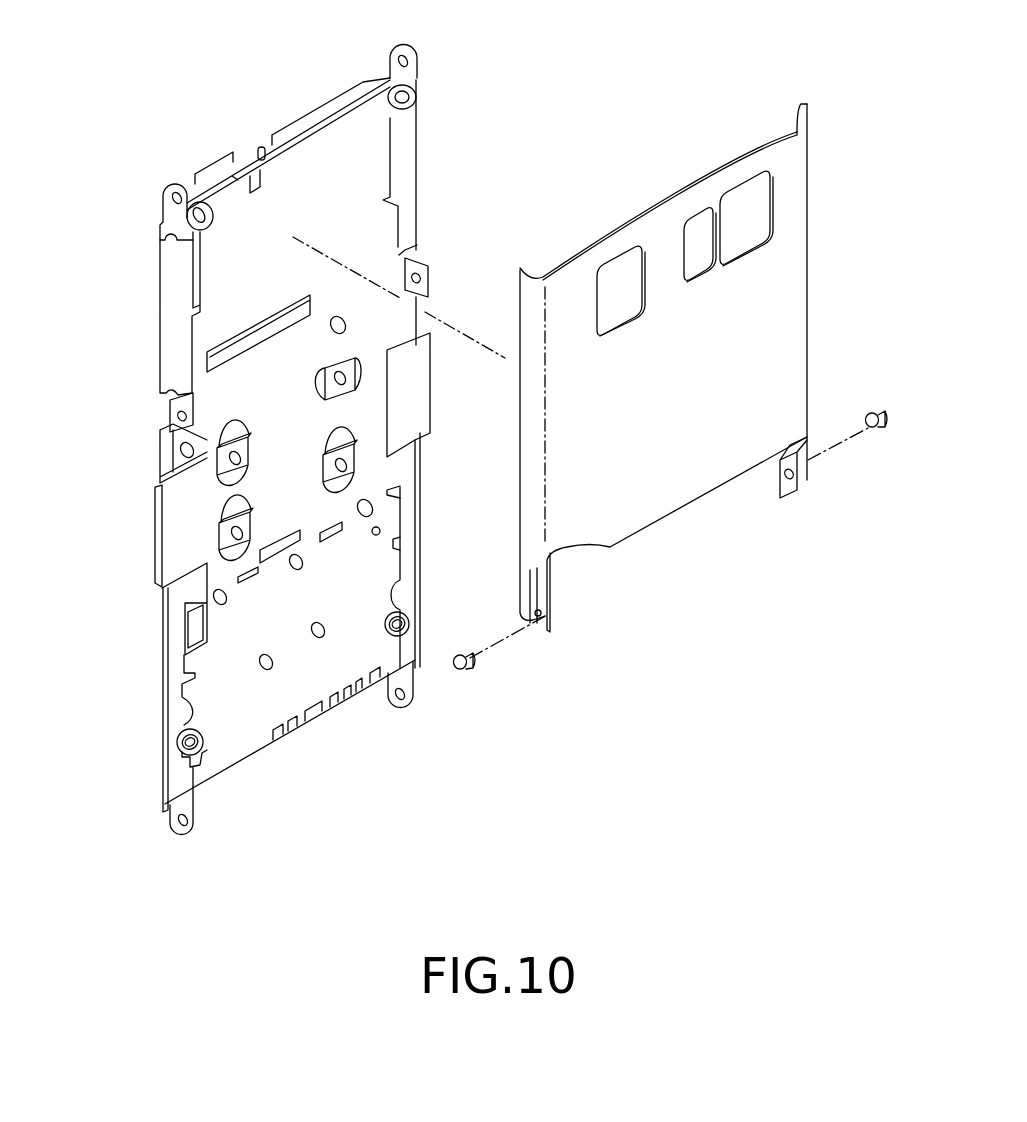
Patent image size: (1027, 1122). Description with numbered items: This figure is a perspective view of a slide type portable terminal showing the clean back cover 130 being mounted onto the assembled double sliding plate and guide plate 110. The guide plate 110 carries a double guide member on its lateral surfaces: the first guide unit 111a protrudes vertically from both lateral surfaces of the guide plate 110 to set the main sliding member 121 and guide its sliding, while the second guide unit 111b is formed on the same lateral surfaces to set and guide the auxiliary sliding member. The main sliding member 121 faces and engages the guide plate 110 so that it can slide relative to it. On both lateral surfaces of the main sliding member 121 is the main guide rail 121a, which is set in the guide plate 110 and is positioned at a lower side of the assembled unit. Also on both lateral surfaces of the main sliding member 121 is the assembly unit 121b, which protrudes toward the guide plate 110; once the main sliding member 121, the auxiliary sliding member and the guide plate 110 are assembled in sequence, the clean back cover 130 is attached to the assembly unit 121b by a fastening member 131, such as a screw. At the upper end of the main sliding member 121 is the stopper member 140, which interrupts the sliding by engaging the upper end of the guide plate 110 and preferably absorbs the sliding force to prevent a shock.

The guide plate 110 is at (330, 680).
The first guide unit 111a is at (158, 523).
The second guide unit 111b is at (197, 268).
The main sliding member 121 is at (240, 750).
The main guide rail 121a is at (160, 612).
The assembly unit 121b is at (418, 262).
The clean back cover 130 is at (670, 483).
The fastening member 131 is at (880, 430).
The stopper member 140 is at (260, 150).